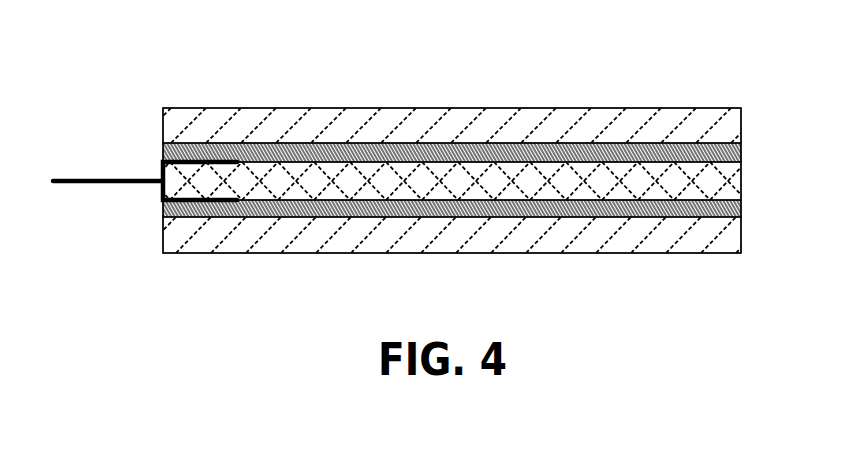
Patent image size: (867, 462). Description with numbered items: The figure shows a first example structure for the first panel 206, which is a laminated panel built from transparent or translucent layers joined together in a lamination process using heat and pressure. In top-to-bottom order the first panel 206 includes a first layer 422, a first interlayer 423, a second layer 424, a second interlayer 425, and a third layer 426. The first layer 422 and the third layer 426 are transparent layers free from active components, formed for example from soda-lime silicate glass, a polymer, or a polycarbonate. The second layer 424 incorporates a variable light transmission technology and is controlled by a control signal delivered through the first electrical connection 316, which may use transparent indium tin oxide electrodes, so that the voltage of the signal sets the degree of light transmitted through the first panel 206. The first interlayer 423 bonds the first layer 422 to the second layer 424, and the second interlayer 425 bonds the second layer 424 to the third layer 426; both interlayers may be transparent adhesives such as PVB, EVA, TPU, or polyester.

The first panel 206 is at (147, 64).
The first electrical connection 316 is at (73, 179).
The first layer 422 is at (742, 127).
The first interlayer 423 is at (163, 150).
The second layer 424 is at (742, 179).
The second interlayer 425 is at (163, 211).
The third layer 426 is at (742, 232).